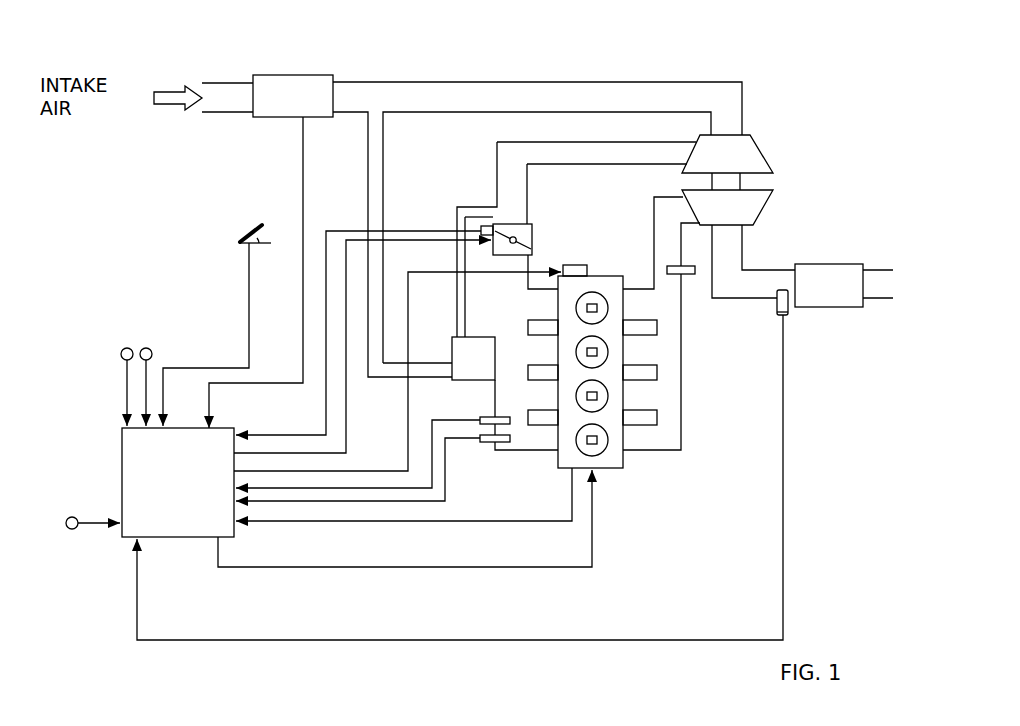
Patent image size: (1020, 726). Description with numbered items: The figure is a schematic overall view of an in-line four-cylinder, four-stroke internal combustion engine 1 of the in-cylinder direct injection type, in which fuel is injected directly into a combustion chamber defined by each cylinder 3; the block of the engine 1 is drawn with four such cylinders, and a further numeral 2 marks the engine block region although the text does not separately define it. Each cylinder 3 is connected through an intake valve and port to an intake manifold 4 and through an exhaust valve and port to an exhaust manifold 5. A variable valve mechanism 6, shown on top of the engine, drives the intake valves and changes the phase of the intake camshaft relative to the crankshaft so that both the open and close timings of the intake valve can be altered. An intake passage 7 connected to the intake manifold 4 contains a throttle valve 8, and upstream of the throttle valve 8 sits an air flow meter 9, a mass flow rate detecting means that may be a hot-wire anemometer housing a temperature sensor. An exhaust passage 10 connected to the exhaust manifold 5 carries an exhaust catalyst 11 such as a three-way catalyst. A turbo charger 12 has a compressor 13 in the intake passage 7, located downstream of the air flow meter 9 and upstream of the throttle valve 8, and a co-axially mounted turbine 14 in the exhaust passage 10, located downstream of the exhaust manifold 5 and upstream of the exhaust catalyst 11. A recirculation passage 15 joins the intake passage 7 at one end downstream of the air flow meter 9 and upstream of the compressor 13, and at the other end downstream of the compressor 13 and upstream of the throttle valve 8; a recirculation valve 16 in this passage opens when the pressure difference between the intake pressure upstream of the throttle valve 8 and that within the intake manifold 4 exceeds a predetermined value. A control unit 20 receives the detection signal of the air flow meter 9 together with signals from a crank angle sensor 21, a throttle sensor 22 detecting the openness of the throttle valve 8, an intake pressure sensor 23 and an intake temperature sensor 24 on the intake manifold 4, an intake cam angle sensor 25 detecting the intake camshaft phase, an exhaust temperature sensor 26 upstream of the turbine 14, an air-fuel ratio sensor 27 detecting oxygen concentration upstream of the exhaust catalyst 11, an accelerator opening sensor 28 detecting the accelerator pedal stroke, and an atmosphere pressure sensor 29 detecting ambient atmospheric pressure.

The internal combustion engine 1 is at (606, 470).
The cylinder 2 is at (600, 440).
The cylinder 3 is at (610, 430).
The intake manifold 4 is at (522, 445).
The exhaust manifold 5 is at (668, 387).
The variable valve mechanism 6 is at (578, 265).
The intake passage 7 is at (662, 92).
The throttle valve 8 is at (535, 232).
The air flow meter 9 is at (296, 73).
The exhaust passage 10 is at (768, 290).
The exhaust catalyst 11 is at (835, 296).
The turbo charger 12 is at (686, 160).
The compressor 13 is at (748, 148).
The turbine 14 is at (757, 203).
The recirculation passage 15 is at (380, 160).
The recirculation valve 16 is at (463, 370).
The control unit 20 is at (133, 465).
The crank angle sensor 21 is at (146, 347).
The throttle sensor 22 is at (482, 226).
The intake pressure sensor 23 is at (487, 443).
The intake temperature sensor 24 is at (488, 417).
The intake cam angle sensor 25 is at (127, 347).
The exhaust temperature sensor 26 is at (690, 276).
The air-fuel ratio sensor 27 is at (790, 312).
The accelerator opening sensor 28 is at (250, 232).
The atmosphere pressure sensor 29 is at (70, 515).